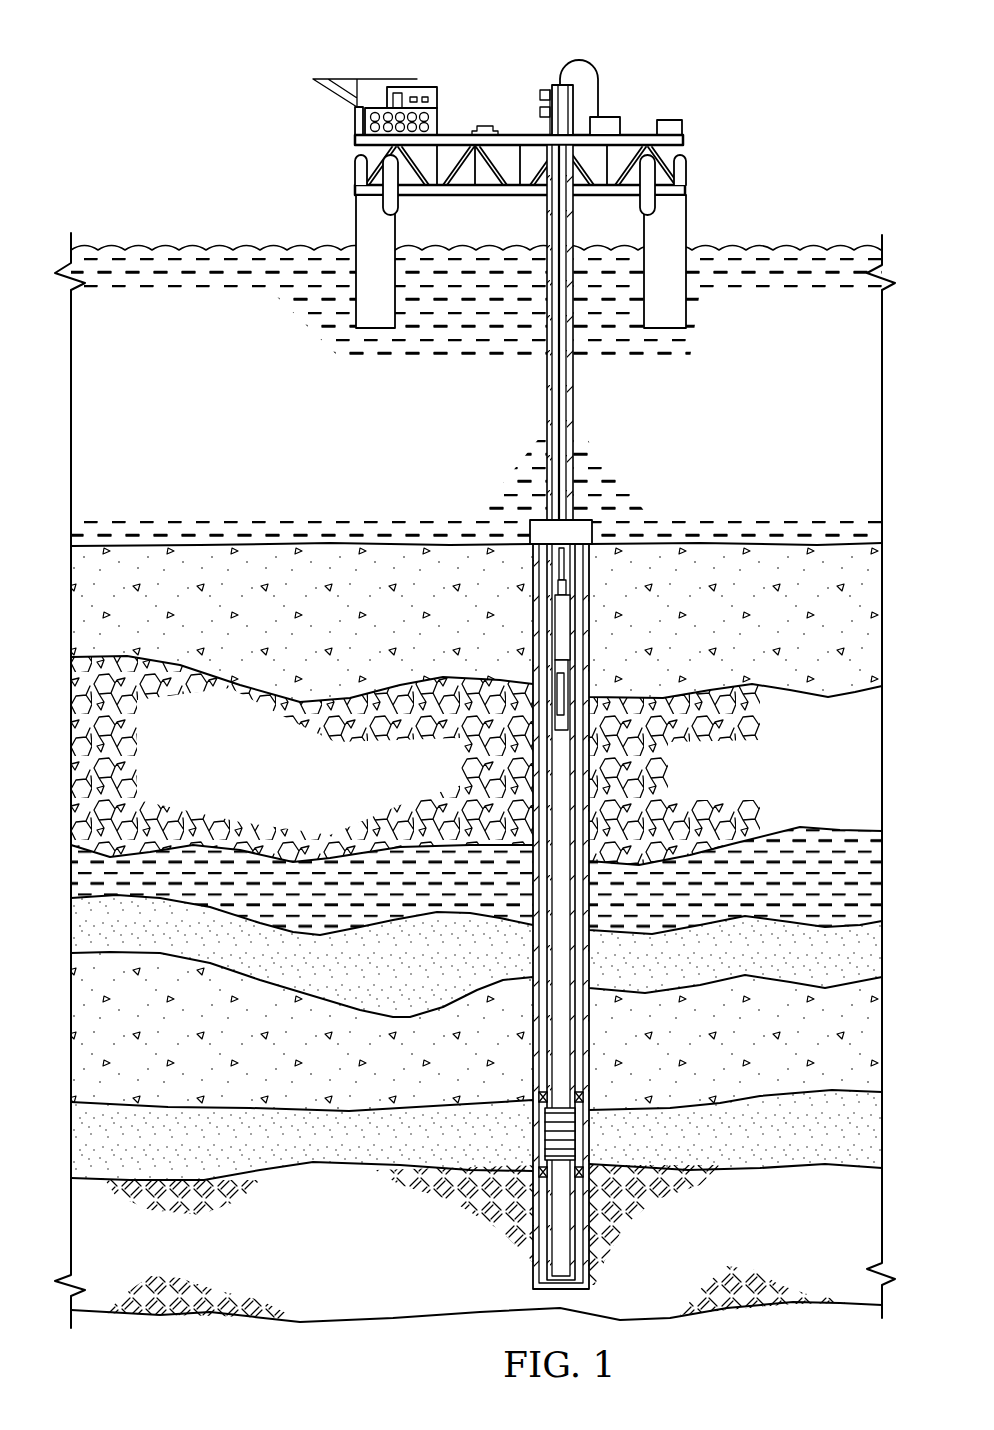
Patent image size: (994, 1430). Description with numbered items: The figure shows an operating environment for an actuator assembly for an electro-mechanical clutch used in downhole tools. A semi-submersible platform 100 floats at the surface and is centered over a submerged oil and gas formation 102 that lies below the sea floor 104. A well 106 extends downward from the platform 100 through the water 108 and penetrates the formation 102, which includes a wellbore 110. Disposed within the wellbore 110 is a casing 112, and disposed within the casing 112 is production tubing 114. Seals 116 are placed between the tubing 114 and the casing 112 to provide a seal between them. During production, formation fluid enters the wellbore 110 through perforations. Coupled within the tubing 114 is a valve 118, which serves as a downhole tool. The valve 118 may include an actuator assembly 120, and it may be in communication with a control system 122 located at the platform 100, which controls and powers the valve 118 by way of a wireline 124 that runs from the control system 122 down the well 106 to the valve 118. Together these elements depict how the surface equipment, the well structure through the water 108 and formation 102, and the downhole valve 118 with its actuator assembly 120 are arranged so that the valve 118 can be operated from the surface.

The semi-submersible platform 100 is at (249, 62).
The oil and gas formation 102 is at (803, 1053).
The sea floor 104 is at (817, 544).
The well 106 is at (547, 388).
The water 108 is at (230, 387).
The wellbore 110 is at (588, 594).
The casing 112 is at (574, 618).
The production tubing 114 is at (562, 623).
The seals 116 is at (583, 1090).
The valve 118 is at (555, 720).
The actuator assembly 120 is at (566, 682).
The control system 122 is at (608, 117).
The wireline 124 is at (580, 60).